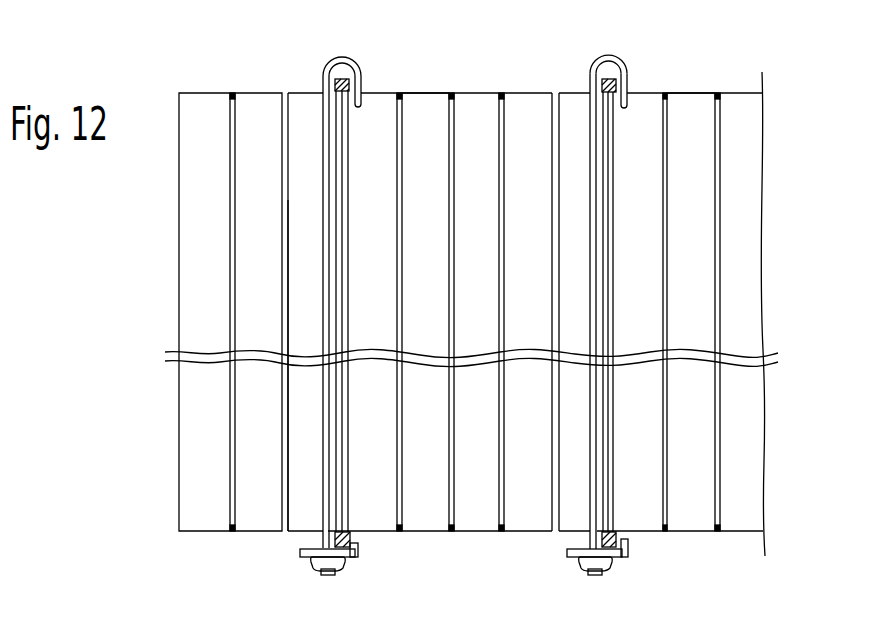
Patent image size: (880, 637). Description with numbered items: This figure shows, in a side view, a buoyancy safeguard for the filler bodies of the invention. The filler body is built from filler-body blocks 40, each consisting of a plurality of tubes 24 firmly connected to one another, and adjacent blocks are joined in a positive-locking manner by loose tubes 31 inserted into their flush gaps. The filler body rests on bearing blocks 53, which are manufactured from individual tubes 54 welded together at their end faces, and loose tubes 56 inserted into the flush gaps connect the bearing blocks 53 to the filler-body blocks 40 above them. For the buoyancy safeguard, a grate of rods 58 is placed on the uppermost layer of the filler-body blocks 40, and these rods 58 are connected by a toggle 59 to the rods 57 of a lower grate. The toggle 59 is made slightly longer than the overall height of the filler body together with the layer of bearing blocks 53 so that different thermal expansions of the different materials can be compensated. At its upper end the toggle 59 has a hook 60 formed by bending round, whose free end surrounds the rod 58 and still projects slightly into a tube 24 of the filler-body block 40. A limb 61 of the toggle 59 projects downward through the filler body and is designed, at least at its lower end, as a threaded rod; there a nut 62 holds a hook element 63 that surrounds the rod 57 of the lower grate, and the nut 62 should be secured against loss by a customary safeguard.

The tube 24 is at (425, 130).
The loose tube 31 is at (301, 113).
The filler-body block 40 is at (465, 74).
The bearing block 53 is at (160, 457).
The tube 54 is at (252, 403).
The loose tube 56 is at (308, 457).
The rod 57 is at (339, 574).
The rod 58 is at (337, 80).
The toggle 59 is at (316, 180).
The hook 60 is at (362, 74).
The limb 61 is at (328, 250).
The nut 62 is at (310, 566).
The hook element 63 is at (358, 549).